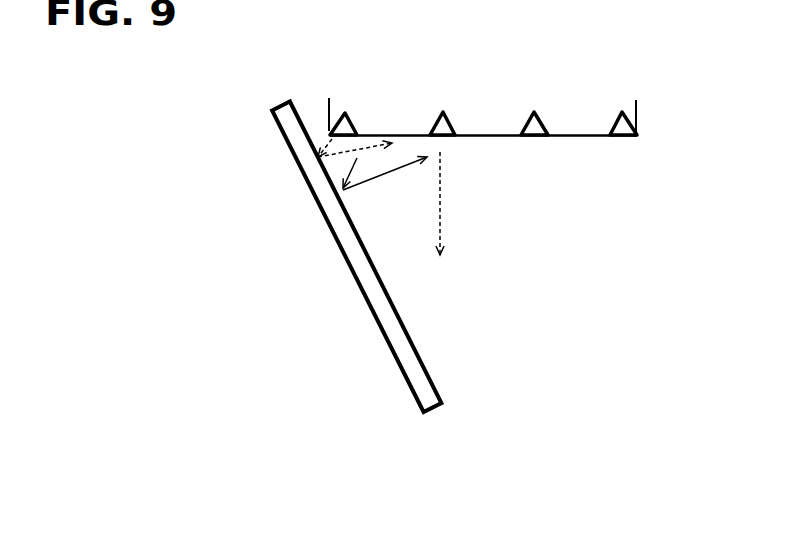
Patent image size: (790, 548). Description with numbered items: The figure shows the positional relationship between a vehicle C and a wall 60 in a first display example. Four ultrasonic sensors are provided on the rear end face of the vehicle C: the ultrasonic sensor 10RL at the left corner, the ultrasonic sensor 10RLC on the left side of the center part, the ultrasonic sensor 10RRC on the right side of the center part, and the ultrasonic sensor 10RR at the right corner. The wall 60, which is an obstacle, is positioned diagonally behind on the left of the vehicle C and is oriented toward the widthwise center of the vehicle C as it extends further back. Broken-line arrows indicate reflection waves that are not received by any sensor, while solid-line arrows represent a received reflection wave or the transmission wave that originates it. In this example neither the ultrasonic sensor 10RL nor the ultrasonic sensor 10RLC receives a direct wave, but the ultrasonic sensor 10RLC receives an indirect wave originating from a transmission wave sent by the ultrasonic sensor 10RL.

The ultrasonic sensor 10RL is at (345, 111).
The ultrasonic sensor 10RLC is at (443, 110).
The ultrasonic sensor 10RRC is at (534, 110).
The ultrasonic sensor 10RR is at (622, 110).
The vehicle C is at (637, 112).
The wall 60 is at (411, 385).